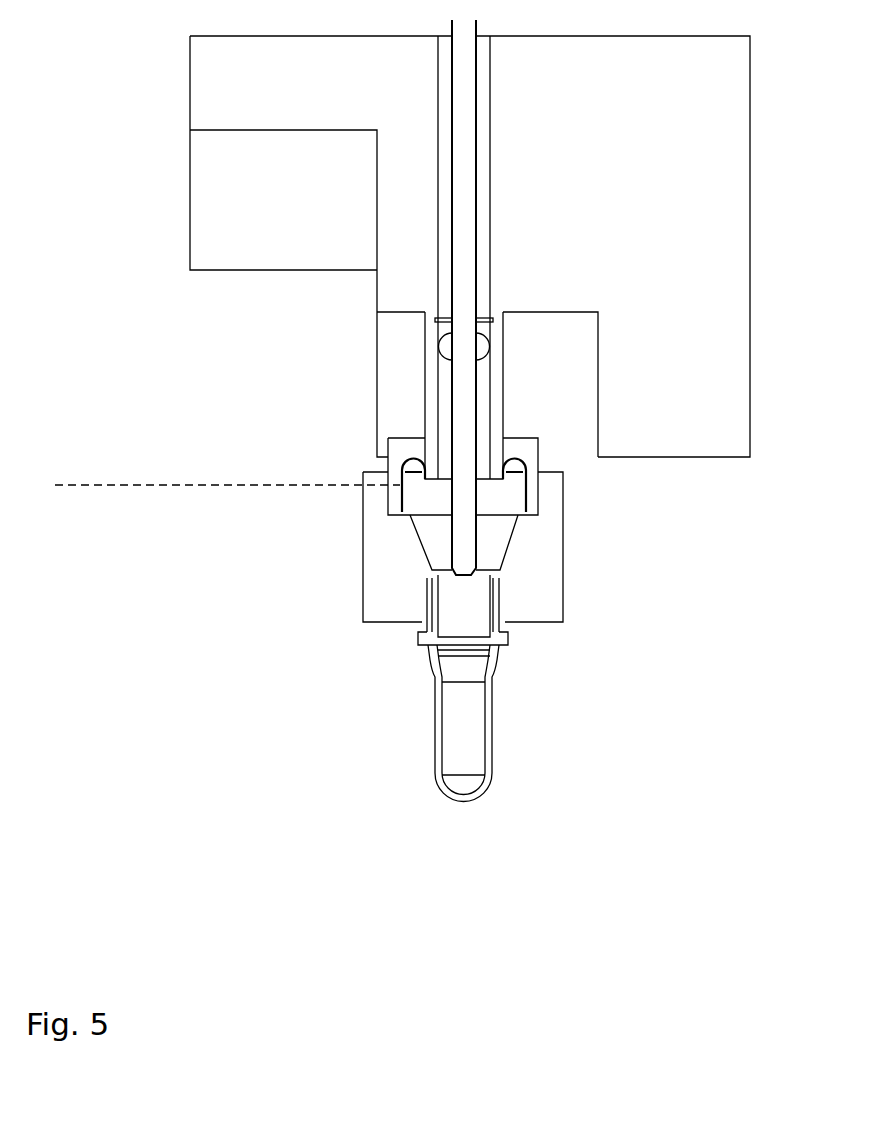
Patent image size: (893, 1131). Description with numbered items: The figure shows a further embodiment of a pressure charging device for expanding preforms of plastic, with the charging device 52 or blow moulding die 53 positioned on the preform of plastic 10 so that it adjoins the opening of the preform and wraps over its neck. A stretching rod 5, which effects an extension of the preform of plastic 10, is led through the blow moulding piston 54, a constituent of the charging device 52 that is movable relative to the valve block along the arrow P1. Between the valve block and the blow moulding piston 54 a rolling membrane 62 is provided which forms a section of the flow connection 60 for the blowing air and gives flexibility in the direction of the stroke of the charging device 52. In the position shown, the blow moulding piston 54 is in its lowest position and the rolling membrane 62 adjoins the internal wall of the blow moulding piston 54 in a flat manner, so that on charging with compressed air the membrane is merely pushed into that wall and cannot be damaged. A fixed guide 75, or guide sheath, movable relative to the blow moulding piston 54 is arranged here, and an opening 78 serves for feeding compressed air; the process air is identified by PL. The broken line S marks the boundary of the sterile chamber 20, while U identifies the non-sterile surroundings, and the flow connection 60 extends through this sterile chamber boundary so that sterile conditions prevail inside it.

The stretching rod 5 is at (462, 133).
The flow connection 60 is at (327, 197).
The blow moulding piston 54 is at (538, 451).
The fixed guide 75 is at (430, 418).
The opening for feeding compressed air 78 is at (443, 347).
The rolling membrane 62 is at (525, 492).
The process air PL is at (497, 540).
The blow moulding die 53 is at (485, 608).
The preform of plastic 10 is at (468, 700).
The charging device 52 is at (660, 608).
The sterile chamber boundary S is at (197, 485).
The surroundings U is at (74, 370).
The sterile chamber 20 is at (164, 682).
The arrow P1 is at (232, 526).